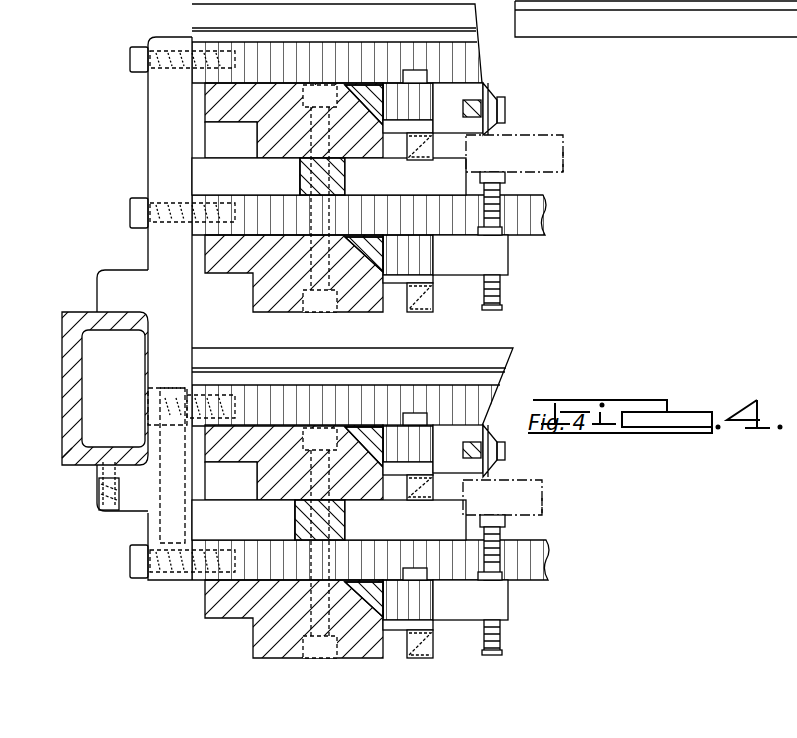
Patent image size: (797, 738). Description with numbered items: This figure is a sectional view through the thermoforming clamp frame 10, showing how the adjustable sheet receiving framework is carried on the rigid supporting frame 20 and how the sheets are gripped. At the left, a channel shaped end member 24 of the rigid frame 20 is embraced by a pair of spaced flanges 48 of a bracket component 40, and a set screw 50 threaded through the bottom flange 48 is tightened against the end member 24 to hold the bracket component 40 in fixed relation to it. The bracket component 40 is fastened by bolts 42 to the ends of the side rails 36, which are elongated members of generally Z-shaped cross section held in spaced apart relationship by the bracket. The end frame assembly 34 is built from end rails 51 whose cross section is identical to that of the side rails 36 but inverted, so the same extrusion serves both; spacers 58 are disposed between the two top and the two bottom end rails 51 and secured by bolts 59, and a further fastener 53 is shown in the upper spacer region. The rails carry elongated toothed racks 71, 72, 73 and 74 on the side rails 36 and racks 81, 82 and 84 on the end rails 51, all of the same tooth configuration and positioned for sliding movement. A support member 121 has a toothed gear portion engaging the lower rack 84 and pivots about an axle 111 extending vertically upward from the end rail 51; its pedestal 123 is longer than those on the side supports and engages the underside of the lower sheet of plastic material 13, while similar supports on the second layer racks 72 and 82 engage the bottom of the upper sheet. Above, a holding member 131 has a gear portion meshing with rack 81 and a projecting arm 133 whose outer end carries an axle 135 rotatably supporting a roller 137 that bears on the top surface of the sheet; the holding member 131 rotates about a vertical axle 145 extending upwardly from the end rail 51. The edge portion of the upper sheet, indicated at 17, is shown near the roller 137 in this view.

The thermoforming clamp frame 10 is at (782, 40).
The lower sheet of plastic material 13 is at (560, 483).
The upper rail 17 is at (565, 160).
The rigid supporting frame 20 is at (70, 462).
The end member 24 is at (75, 310).
The end frame assembly 34 is at (205, 128).
The side rail 36 is at (200, 172).
The bracket component 40 is at (150, 143).
The bolt 42 is at (130, 58).
The flange 48 is at (128, 274).
The set screw 50 is at (82, 507).
The end rail 51 is at (231, 311).
The stud 53 is at (305, 188).
The spacer 58 is at (345, 176).
The bolt 59 is at (345, 523).
The toothed rack 71 is at (462, 57).
The toothed rack 72 is at (545, 217).
The toothed rack 73 is at (488, 405).
The toothed rack 74 is at (678, 0).
The toothed rack 81 is at (364, 276).
The toothed rack 82 is at (364, 427).
The toothed rack 84 is at (600, 2).
The axle 111 is at (722, 0).
The support member 121 is at (470, 264).
The pedestal 123 is at (505, 297).
The holding member 131 is at (455, 115).
The projecting arm 133 is at (488, 89).
The axle 135 is at (514, 153).
The roller 137 is at (505, 109).
The vertical axle 145 is at (415, 72).